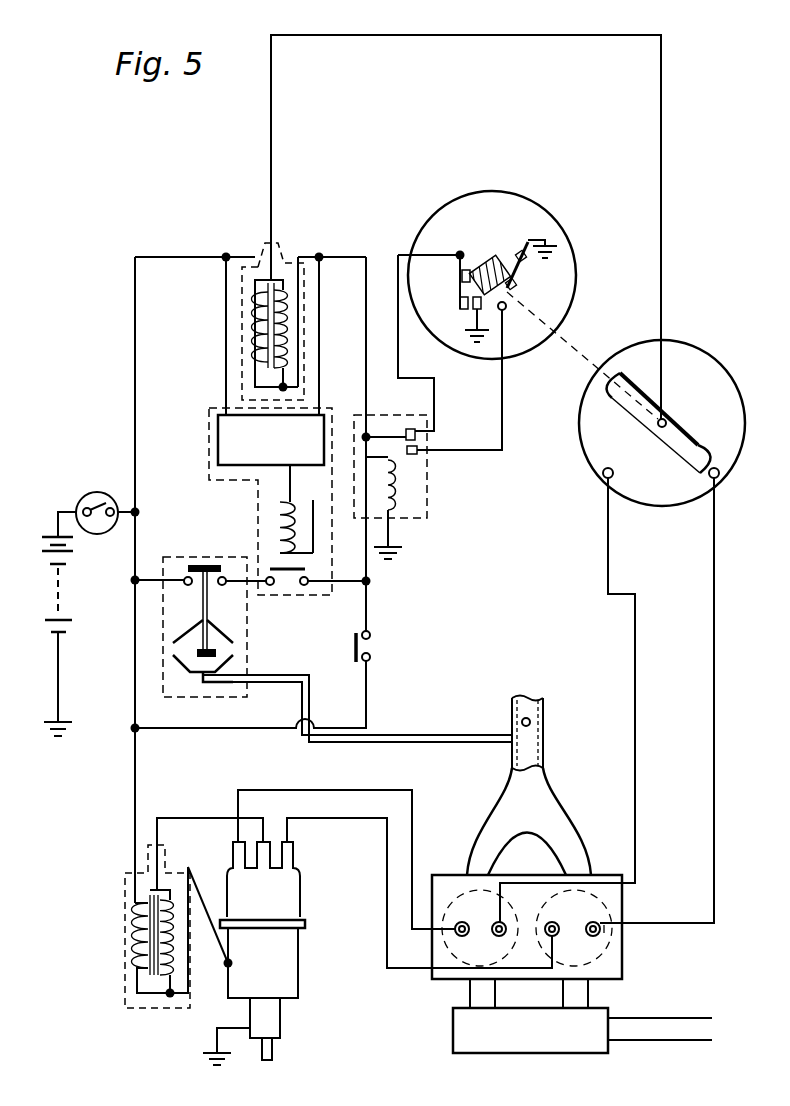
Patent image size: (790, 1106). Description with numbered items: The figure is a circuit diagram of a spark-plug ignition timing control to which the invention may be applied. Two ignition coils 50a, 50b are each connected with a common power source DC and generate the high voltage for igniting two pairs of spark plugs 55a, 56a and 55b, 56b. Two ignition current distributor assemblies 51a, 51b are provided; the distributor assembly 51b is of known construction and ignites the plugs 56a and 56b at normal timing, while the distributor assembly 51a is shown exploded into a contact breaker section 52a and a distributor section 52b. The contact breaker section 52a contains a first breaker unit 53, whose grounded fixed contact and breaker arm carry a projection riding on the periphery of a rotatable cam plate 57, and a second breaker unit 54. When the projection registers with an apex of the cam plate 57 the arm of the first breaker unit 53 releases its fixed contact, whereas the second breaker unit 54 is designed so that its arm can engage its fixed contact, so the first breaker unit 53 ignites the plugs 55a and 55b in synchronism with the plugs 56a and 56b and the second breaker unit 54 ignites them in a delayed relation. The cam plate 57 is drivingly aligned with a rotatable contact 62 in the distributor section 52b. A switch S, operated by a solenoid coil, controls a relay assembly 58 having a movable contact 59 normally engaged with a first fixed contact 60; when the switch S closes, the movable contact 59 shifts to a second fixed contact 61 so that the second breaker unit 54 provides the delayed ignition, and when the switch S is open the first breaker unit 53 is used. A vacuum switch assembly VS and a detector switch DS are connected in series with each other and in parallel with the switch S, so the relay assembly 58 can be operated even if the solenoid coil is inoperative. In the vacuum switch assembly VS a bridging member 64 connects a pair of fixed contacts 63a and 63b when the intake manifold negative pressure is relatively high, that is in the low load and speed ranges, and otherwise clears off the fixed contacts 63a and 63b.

The ignition coil 50a is at (260, 246).
The ignition coil 50b is at (125, 883).
The ignition current distributor assembly 51a is at (573, 374).
The ignition current distributor assembly 51b is at (300, 872).
The contact breaker section 52a is at (528, 274).
The distributor section 52b is at (662, 403).
The first breaker unit 53 is at (472, 262).
The second breaker unit 54 is at (512, 271).
The spark plug 55a is at (600, 918).
The spark plug 55b is at (495, 936).
The spark plug 56a is at (559, 932).
The spark plug 56b is at (456, 937).
The rotatable cam plate 57 is at (487, 258).
The relay assembly 58 is at (401, 459).
The movable contact 59 is at (390, 436).
The first fixed contact 60 is at (418, 431).
The second fixed contact 61 is at (413, 455).
The rotatable contact 62 is at (688, 436).
The fixed contact 63a is at (185, 585).
The fixed contact 63b is at (223, 586).
The bridging member 64 is at (198, 566).
The switch S is at (352, 648).
The detector switch DS is at (209, 478).
The vacuum switch assembly VS is at (205, 621).
The power source DC is at (72, 560).